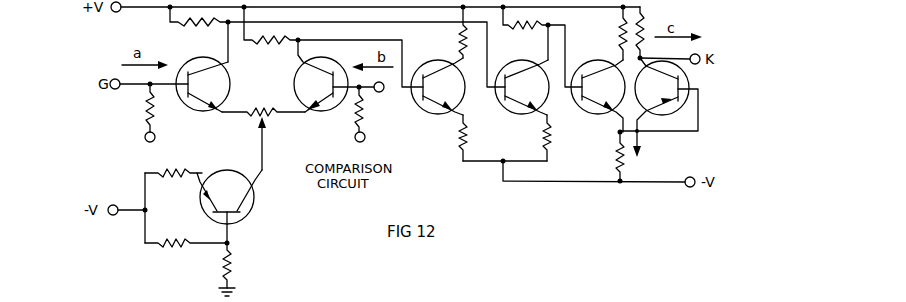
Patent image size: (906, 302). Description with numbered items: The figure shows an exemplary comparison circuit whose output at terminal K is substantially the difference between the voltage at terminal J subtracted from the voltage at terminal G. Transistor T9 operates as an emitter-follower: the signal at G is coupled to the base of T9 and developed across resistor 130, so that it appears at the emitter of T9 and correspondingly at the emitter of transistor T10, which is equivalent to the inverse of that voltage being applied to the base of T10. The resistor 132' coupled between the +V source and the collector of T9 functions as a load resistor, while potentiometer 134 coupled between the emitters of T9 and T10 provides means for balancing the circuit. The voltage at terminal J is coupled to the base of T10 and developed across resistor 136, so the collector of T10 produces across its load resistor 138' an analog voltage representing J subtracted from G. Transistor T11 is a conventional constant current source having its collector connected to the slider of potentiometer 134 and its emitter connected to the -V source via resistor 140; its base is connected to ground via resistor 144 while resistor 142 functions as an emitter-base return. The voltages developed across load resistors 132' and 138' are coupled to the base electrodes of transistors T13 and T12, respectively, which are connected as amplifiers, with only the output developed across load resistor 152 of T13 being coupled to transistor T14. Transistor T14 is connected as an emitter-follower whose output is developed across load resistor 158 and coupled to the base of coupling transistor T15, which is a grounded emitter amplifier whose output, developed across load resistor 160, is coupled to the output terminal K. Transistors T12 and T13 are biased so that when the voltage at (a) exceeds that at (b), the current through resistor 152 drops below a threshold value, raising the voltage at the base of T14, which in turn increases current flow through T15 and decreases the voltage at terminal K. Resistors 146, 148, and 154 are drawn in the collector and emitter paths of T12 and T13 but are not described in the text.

The resistor 130 is at (154, 115).
The load resistor 132' is at (199, 26).
The potentiometer 134 is at (263, 102).
The resistor 136 is at (351, 112).
The load resistor 138' is at (271, 36).
The resistor 140 is at (175, 169).
The resistor 142 is at (192, 228).
The resistor 144 is at (233, 275).
The resistor 146 is at (458, 43).
The resistor 148 is at (453, 140).
The load resistor 152 is at (534, 31).
The resistor 154 is at (539, 139).
The load resistor 158 is at (614, 160).
The load resistor 160 is at (647, 35).
The transistor T9 is at (214, 84).
The transistor T10 is at (319, 63).
The transistor T11 is at (252, 207).
The transistor T12 is at (436, 113).
The transistor T13 is at (500, 103).
The transistor T14 is at (578, 105).
The coupling transistor T15 is at (659, 117).